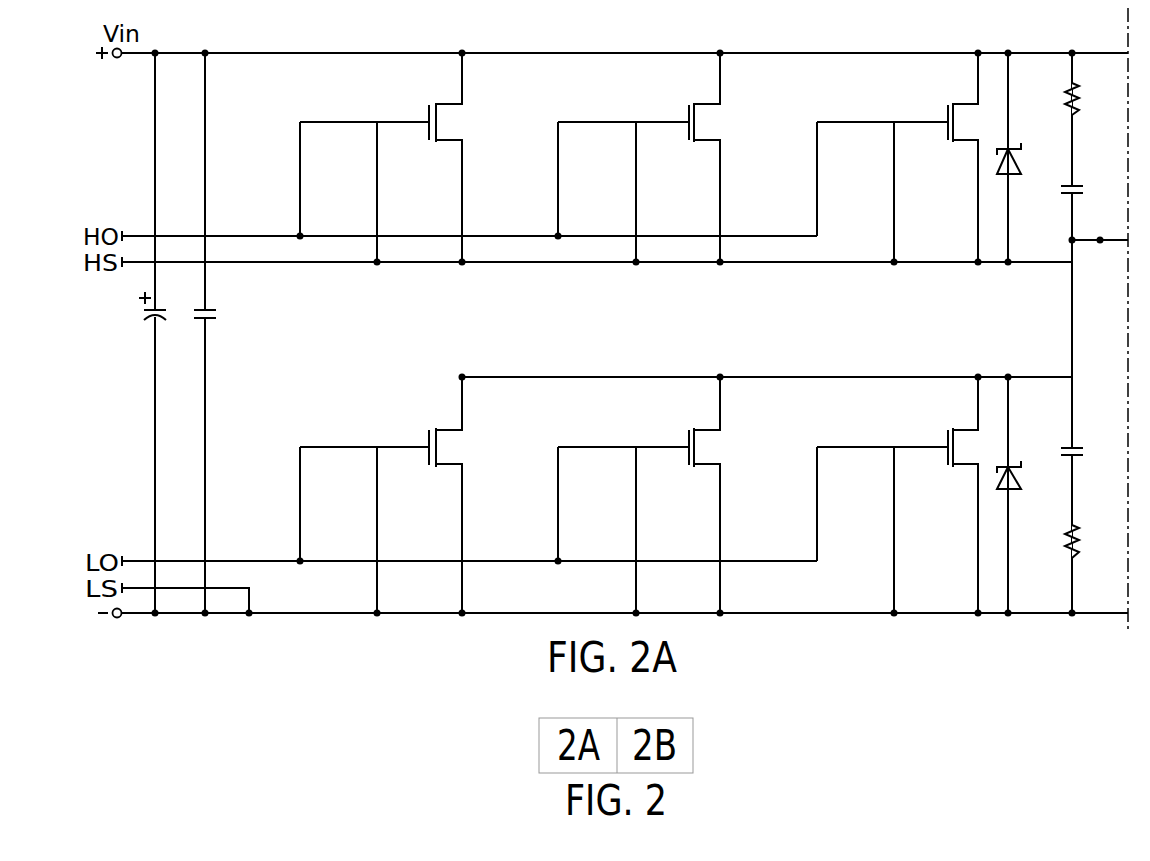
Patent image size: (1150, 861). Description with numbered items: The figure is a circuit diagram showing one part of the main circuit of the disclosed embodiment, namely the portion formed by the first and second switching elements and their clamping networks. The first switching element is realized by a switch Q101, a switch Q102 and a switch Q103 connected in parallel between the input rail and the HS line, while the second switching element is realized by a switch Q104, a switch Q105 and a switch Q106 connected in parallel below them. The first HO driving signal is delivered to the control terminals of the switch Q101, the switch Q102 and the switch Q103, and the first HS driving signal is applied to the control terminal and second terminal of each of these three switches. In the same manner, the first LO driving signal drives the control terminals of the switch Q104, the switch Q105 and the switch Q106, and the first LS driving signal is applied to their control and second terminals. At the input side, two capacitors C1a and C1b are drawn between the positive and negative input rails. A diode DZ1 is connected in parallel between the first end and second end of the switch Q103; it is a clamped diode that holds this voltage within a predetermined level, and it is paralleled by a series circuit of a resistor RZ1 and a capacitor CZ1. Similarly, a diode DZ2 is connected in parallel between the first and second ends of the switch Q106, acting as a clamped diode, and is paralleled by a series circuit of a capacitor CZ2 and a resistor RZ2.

The switch Q101 is at (381, 157).
The switch Q102 is at (639, 157).
The switch Q103 is at (897, 157).
The switch Q104 is at (381, 495).
The switch Q105 is at (639, 495).
The switch Q106 is at (897, 495).
The input electrolytic capacitor C1a is at (168, 333).
The input capacitor C1b is at (223, 333).
The diode DZ1 is at (1027, 157).
The diode DZ2 is at (1027, 495).
The resistor RZ1 is at (1092, 112).
The capacitor CZ1 is at (1090, 202).
The capacitor CZ2 is at (1090, 465).
The resistor RZ2 is at (1092, 554).